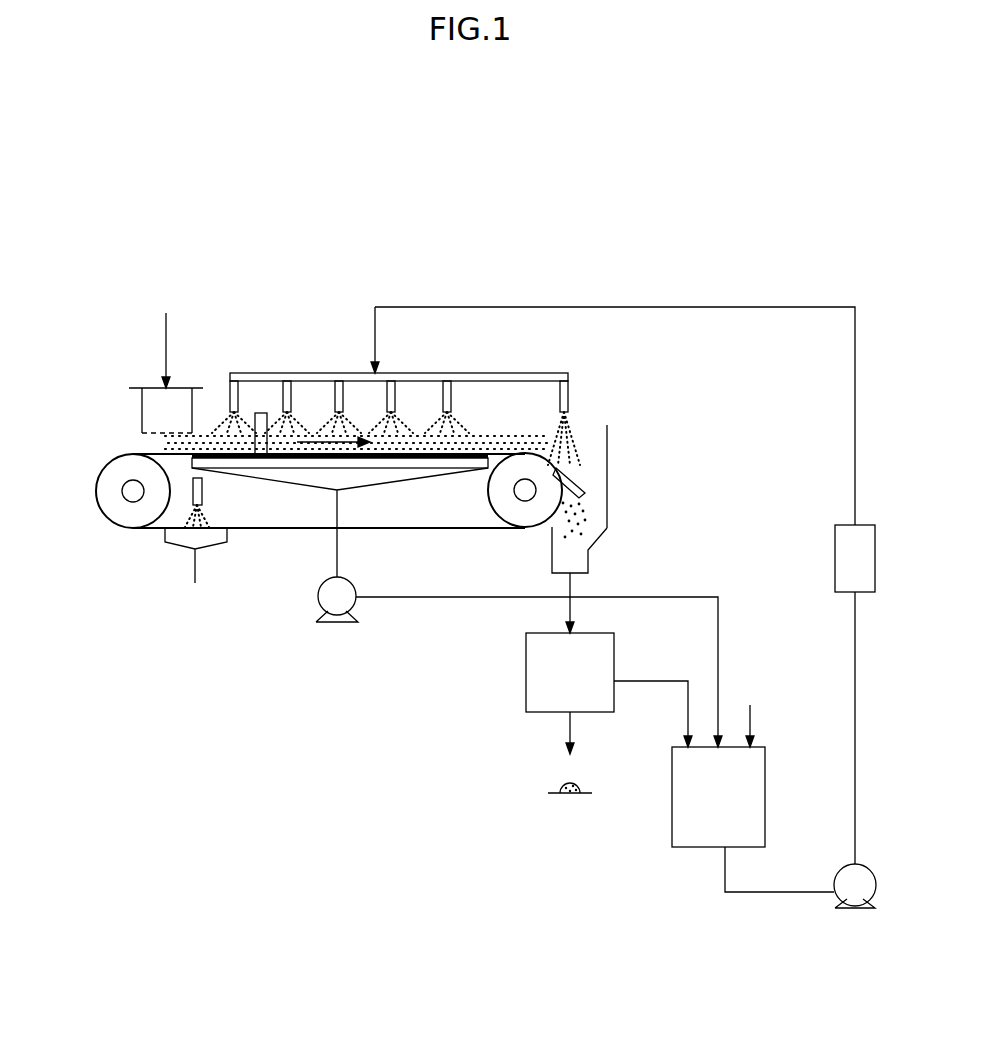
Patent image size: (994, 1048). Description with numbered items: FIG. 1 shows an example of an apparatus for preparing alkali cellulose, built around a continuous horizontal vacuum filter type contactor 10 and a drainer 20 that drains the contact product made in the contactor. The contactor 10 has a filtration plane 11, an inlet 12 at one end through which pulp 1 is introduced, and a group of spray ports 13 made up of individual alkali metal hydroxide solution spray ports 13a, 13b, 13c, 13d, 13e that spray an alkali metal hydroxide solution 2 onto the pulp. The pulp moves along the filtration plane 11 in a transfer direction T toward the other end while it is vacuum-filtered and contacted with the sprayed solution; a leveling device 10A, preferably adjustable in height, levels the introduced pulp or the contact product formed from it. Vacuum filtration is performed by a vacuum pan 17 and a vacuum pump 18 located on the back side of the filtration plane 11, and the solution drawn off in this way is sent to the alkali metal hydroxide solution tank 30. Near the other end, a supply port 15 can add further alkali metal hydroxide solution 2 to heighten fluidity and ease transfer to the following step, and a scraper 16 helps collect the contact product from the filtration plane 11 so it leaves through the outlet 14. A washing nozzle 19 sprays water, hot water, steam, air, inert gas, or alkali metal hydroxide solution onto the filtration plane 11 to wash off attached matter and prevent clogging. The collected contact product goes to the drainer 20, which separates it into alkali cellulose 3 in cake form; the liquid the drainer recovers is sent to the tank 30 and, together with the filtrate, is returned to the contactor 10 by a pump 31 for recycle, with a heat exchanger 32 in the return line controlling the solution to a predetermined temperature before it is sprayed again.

The pulp 1 is at (166, 335).
The alkali metal hydroxide solution 2 is at (752, 715).
The alkali cellulose 3 is at (582, 786).
The continuous horizontal vacuum filter type contactor 10 is at (126, 540).
The leveling device 10A is at (262, 413).
The filtration plane 11 is at (483, 455).
The inlet 12 is at (142, 405).
The group of spray ports 13 is at (222, 386).
The alkali metal hydroxide solution spray port 13a is at (239, 392).
The alkali metal hydroxide solution spray port 13b is at (292, 392).
The alkali metal hydroxide solution spray port 13c is at (344, 392).
The alkali metal hydroxide solution spray port 13d is at (396, 392).
The alkali metal hydroxide solution spray port 13e is at (452, 392).
The outlet 14 is at (588, 560).
The supply port 15 is at (570, 388).
The scraper 16 is at (577, 500).
The vacuum pan 17 is at (413, 478).
The vacuum pump 18 is at (354, 607).
The washing nozzle 19 is at (203, 490).
The drainer 20 is at (525, 672).
The alkali metal hydroxide solution tank 30 is at (672, 820).
The pump 31 is at (843, 868).
The heat exchanger 32 is at (834, 553).
The transfer direction T is at (300, 440).